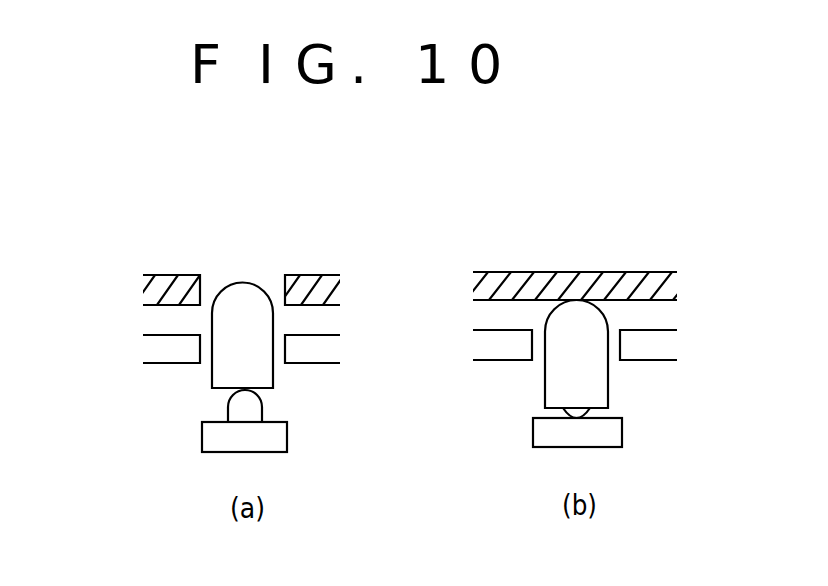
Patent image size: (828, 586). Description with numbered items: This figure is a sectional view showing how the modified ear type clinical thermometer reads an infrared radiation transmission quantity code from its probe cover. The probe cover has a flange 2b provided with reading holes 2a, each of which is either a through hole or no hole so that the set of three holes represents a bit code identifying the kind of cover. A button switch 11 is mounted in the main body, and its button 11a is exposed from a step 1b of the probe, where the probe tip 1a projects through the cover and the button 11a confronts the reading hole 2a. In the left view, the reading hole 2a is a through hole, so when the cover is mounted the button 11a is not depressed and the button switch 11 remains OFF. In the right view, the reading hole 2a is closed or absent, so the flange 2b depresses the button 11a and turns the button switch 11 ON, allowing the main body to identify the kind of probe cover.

The tip of movable body 1a is at (245, 292).
The step 1b is at (296, 350).
The reading hole 2a is at (218, 288).
The flange 2b is at (302, 283).
The button switch 11 is at (218, 436).
The button 11a is at (240, 413).